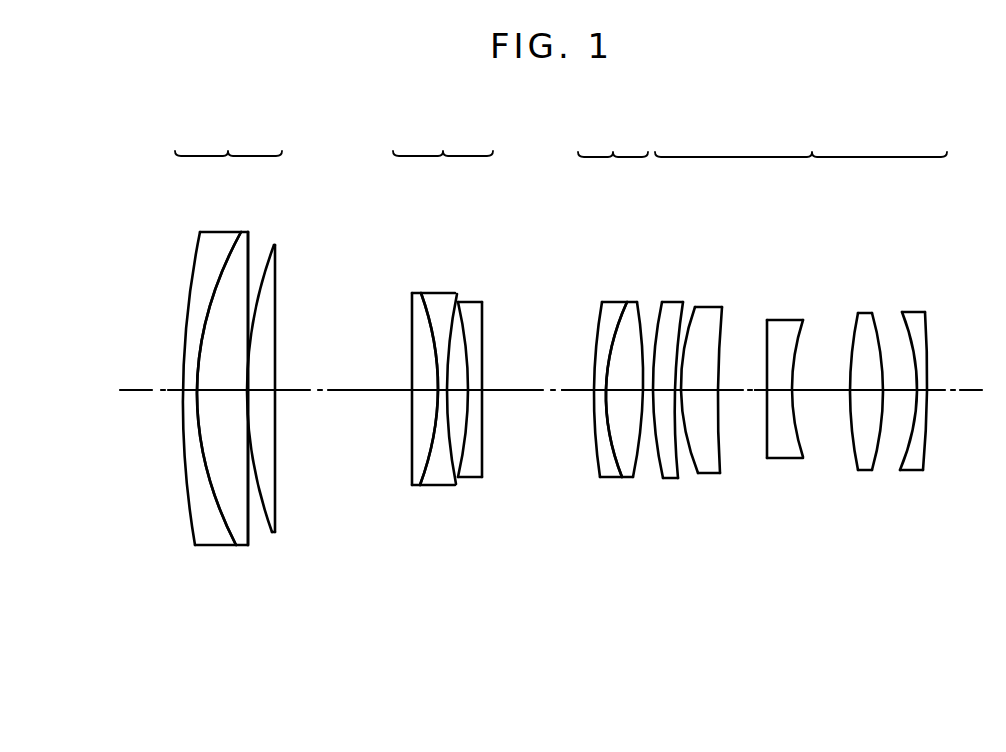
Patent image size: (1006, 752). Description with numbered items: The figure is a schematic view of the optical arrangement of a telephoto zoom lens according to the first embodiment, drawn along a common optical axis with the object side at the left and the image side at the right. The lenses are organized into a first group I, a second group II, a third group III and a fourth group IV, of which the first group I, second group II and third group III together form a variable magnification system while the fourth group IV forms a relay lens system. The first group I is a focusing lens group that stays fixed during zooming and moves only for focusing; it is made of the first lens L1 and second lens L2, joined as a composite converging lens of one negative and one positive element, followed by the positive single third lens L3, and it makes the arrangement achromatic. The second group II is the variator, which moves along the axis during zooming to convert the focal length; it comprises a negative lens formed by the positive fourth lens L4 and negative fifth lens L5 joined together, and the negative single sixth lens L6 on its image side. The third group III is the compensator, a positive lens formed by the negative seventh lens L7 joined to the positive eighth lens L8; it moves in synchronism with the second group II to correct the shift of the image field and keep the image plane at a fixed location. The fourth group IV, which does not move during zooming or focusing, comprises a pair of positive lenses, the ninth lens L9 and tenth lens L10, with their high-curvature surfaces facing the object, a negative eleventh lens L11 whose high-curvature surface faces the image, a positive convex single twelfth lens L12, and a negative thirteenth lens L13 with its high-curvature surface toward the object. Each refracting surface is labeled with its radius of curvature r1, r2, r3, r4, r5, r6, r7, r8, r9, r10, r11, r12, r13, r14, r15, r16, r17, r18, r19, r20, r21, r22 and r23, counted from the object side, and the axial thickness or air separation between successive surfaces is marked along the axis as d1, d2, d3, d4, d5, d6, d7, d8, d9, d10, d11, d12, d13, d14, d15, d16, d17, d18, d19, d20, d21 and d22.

The first group I is at (275, 348).
The second group II is at (481, 326).
The third group III is at (664, 316).
The fourth group IV is at (817, 308).
The first lens L1 is at (195, 392).
The second lens L2 is at (236, 388).
The third lens L3 is at (283, 400).
The fourth lens L4 is at (414, 399).
The fifth lens L5 is at (438, 399).
The sixth lens L6 is at (494, 399).
The seventh lens L7 is at (602, 395).
The eighth lens L8 is at (635, 385).
The ninth lens L9 is at (687, 385).
The tenth lens L10 is at (724, 386).
The eleventh lens L11 is at (787, 395).
The twelfth lens L12 is at (871, 385).
The thirteenth lens L13 is at (939, 392).
The radius of curvature of first surface r1 is at (192, 267).
The radius of curvature of second surface r2 is at (228, 252).
The radius of curvature of third surface r3 is at (252, 245).
The radius of curvature of fourth surface r4 is at (263, 248).
The radius of curvature of fifth surface r5 is at (278, 268).
The radius of curvature of sixth surface r6 is at (412, 318).
The radius of curvature of seventh surface r7 is at (412, 296).
The radius of curvature of eighth surface r8 is at (453, 310).
The radius of curvature of ninth surface r9 is at (468, 317).
The radius of curvature of tenth surface r10 is at (483, 320).
The radius of curvature of eleventh surface r11 is at (598, 318).
The radius of curvature of twelfth surface r12 is at (620, 308).
The radius of curvature of thirteenth surface r13 is at (638, 307).
The radius of curvature of fourteenth surface r14 is at (662, 310).
The radius of curvature of fifteenth surface r15 is at (687, 313).
The radius of curvature of sixteenth surface r16 is at (698, 312).
The radius of curvature of seventeenth surface r17 is at (725, 317).
The radius of curvature of eighteenth surface r18 is at (767, 352).
The radius of curvature of nineteenth surface r19 is at (808, 335).
The radius of curvature of twentieth surface r20 is at (853, 330).
The radius of curvature of twenty-first surface r21 is at (878, 328).
The radius of curvature of twenty-second surface r22 is at (898, 323).
The radius of curvature of twenty-third surface r23 is at (927, 328).
The axial separation between first and second surfaces d1 is at (185, 407).
The axial separation between second and third surfaces d2 is at (217, 386).
The axial separation between third and fourth surfaces d3 is at (243, 393).
The axial separation between fourth and fifth surfaces d4 is at (267, 386).
The axial separation between fifth and sixth surfaces d5 is at (330, 386).
The axial separation between sixth and seventh surfaces d6 is at (420, 388).
The axial separation between seventh and eighth surfaces d7 is at (437, 403).
The axial separation between eighth and ninth surfaces d8 is at (457, 390).
The axial separation between ninth and tenth surfaces d9 is at (480, 395).
The axial separation between tenth and eleventh surfaces d10 is at (530, 388).
The axial separation between eleventh and twelfth surfaces d11 is at (595, 390).
The axial separation between twelfth and thirteenth surfaces d12 is at (607, 393).
The axial separation between thirteenth and fourteenth surfaces d13 is at (643, 392).
The axial separation between fourteenth and fifteenth surfaces d14 is at (655, 392).
The axial separation between fifteenth and sixteenth surfaces d15 is at (682, 392).
The axial separation between sixteenth and seventeenth surfaces d16 is at (712, 393).
The axial separation between seventeenth and eighteenth surfaces d17 is at (743, 397).
The axial separation between eighteenth and nineteenth surfaces d18 is at (787, 390).
The axial separation between nineteenth and twentieth surfaces d19 is at (822, 393).
The axial separation between twentieth and twenty-first surfaces d20 is at (863, 393).
The axial separation between twenty-first and twenty-second surfaces d21 is at (895, 390).
The axial separation between twenty-second and twenty-third surfaces d22 is at (923, 392).